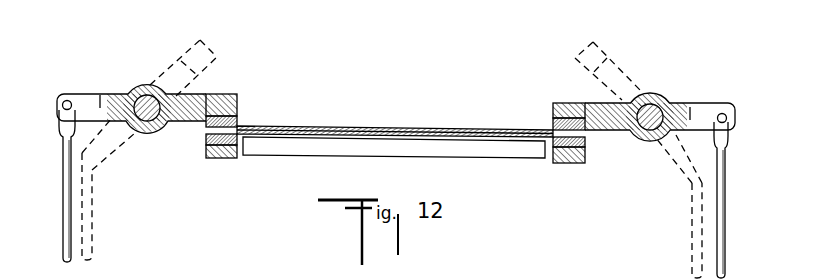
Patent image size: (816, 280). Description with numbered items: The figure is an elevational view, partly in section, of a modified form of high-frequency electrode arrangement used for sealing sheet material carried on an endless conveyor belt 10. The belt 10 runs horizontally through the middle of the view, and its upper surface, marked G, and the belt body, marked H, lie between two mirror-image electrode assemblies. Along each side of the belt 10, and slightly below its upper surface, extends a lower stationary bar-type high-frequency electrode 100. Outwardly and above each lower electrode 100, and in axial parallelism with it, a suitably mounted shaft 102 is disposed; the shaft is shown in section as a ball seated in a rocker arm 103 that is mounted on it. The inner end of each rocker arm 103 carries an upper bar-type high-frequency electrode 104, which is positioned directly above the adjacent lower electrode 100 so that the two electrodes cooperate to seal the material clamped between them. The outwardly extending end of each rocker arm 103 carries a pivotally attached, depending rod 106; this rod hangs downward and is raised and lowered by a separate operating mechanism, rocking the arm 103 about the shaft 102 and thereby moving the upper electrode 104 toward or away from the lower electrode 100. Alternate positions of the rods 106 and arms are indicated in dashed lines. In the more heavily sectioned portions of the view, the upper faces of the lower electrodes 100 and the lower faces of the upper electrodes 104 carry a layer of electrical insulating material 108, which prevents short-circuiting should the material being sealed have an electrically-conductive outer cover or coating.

The conveyor belt 10 is at (507, 155).
The lower bar-type electrode 100 is at (226, 157).
The shaft 102 is at (158, 113).
The rocker arm 103 is at (141, 95).
The bar-type high-frequency electrode 104 is at (224, 98).
The depending rod 106 is at (63, 155).
The electrical insulating material 108 is at (238, 120).
The belt surface G is at (394, 126).
The belt H is at (428, 126).